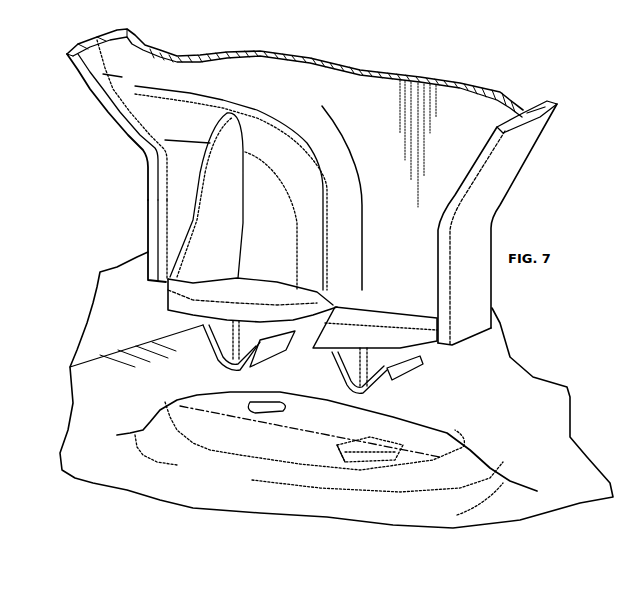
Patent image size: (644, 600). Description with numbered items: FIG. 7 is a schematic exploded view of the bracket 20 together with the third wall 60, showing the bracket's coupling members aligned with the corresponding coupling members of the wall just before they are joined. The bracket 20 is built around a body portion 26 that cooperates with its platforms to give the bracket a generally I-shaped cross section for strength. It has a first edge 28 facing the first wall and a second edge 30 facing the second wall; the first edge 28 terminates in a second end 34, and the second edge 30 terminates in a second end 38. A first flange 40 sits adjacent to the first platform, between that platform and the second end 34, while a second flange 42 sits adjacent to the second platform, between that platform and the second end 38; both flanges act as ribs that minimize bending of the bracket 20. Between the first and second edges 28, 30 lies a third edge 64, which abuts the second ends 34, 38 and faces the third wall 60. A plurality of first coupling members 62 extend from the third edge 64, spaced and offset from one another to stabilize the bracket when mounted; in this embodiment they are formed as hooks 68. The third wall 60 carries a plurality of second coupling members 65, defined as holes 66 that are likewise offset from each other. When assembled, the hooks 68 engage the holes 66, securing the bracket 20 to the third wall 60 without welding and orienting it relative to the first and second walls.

The bracket 20 is at (367, 87).
The body portion 26 is at (447, 91).
The first edge 28 is at (527, 112).
The second edge 30 is at (103, 77).
The second end 34 is at (442, 342).
The second end 38 is at (168, 279).
The first flange 40 is at (478, 290).
The second flange 42 is at (152, 205).
The third wall 60 is at (195, 495).
The first coupling members 62 is at (445, 386).
The third edge 64 is at (352, 312).
The second coupling members 65 is at (192, 423).
The holes 66 is at (285, 410).
The hooks 68 is at (212, 350).